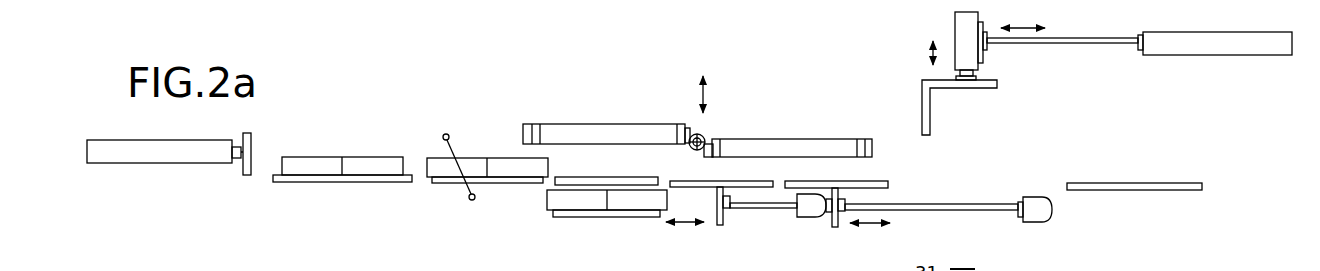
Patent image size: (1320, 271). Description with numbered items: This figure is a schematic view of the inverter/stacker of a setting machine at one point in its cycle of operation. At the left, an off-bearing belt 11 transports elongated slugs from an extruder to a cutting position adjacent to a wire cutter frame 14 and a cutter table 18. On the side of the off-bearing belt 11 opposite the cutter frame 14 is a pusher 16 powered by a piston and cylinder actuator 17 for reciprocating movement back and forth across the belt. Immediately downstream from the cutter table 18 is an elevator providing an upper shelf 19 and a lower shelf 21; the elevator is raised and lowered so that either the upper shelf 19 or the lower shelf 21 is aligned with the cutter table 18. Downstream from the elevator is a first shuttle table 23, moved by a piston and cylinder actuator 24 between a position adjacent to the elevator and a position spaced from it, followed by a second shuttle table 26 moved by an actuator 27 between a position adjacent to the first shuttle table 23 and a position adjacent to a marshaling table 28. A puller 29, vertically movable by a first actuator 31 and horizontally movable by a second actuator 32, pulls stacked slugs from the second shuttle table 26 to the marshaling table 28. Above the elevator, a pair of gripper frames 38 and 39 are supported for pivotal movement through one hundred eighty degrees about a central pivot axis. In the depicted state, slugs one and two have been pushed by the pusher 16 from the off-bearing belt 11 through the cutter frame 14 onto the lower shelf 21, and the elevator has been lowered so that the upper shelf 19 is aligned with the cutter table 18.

The off-bearing belt 11 is at (330, 178).
The wire cutter frame 14 is at (446, 134).
The pusher 16 is at (253, 147).
The piston and cylinder actuator 17 is at (197, 153).
The cutter table 18 is at (497, 179).
The upper shelf 19 is at (595, 177).
The lower shelf 21 is at (588, 217).
The first shuttle table 23 is at (741, 187).
The piston and cylinder actuator 24 is at (808, 212).
The second shuttle table 26 is at (885, 181).
The actuator 27 is at (1033, 211).
The marshaling table 28 is at (1110, 190).
The puller 29 is at (930, 113).
The first actuator 31 is at (968, 28).
The second actuator 32 is at (1172, 42).
The gripper frame 38 is at (563, 133).
The gripper frame 39 is at (773, 150).